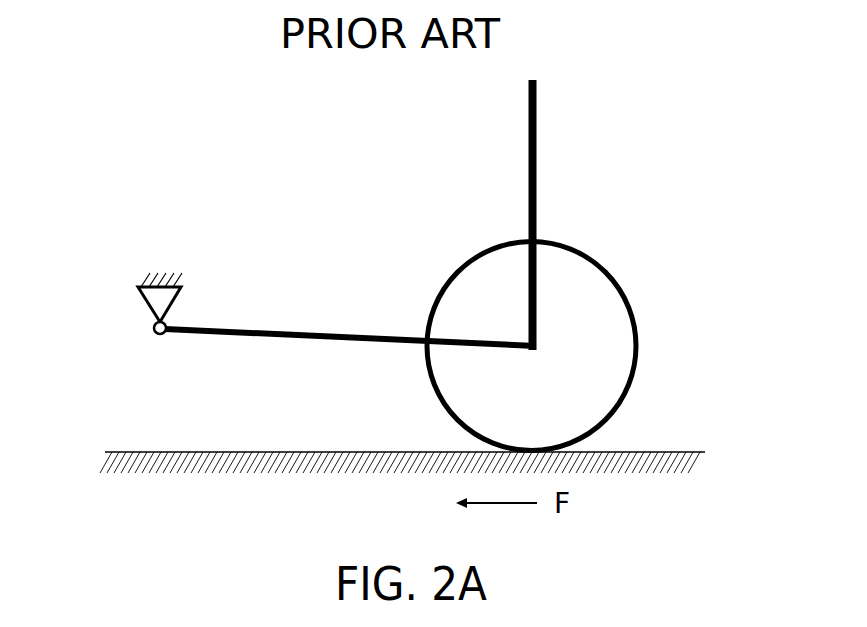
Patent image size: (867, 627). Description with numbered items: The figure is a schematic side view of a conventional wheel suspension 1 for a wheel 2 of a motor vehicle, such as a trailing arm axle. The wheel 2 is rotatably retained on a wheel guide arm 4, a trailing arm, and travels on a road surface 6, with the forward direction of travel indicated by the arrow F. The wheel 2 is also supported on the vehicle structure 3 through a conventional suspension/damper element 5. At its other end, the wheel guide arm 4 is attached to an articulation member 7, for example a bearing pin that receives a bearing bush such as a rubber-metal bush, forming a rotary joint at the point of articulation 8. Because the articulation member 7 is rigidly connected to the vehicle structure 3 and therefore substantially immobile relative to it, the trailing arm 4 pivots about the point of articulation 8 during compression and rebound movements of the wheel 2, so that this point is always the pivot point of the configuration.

The wheel suspension 1 is at (163, 137).
The wheel 2 is at (612, 302).
The vehicle structure 3 is at (178, 280).
The wheel guide arm 4 is at (267, 328).
The suspension/damper element 5 is at (537, 192).
The road surface 6 is at (680, 451).
The articulation member 7 is at (140, 300).
The point of articulation 8 is at (153, 329).